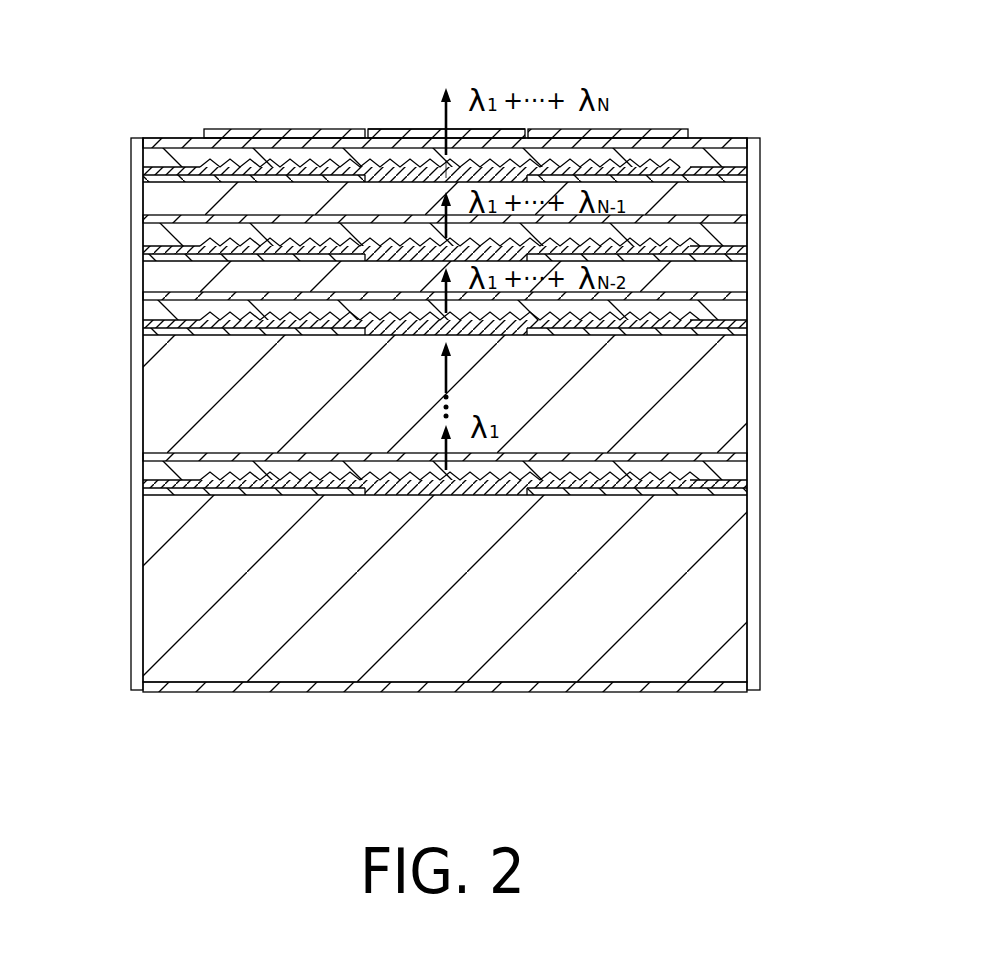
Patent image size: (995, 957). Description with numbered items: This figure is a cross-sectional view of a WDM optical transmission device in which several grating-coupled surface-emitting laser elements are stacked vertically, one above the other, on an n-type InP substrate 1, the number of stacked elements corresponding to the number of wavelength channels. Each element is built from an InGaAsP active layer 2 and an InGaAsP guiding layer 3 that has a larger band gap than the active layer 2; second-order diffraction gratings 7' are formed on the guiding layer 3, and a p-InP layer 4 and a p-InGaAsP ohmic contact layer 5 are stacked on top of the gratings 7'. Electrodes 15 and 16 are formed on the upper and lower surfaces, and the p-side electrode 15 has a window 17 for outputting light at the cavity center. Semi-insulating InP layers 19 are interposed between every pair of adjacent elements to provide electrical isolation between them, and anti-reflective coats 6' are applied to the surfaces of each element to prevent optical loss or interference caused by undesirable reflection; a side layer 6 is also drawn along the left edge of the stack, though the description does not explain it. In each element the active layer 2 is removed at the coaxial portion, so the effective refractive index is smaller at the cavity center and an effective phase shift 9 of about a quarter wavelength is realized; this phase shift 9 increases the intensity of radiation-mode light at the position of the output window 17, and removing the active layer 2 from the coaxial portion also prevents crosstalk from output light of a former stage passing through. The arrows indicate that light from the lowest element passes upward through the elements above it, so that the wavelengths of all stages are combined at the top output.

The n-type InP substrate 1 is at (157, 195).
The active layer 2 is at (742, 180).
The guiding layer 3 is at (224, 158).
The p-InP layer 4 is at (163, 158).
The ohmic contact layer 5 is at (187, 138).
The side electrode 6 is at (105, 412).
The anti-reflective coat 6' is at (423, 99).
The second-order diffraction gratings 7' is at (284, 120).
The phase shift region 9 is at (393, 177).
The p-side electrode 15 is at (668, 130).
The electrode 16 is at (627, 693).
The window 17 is at (402, 132).
The semi-insulating InP layer 19 is at (157, 218).